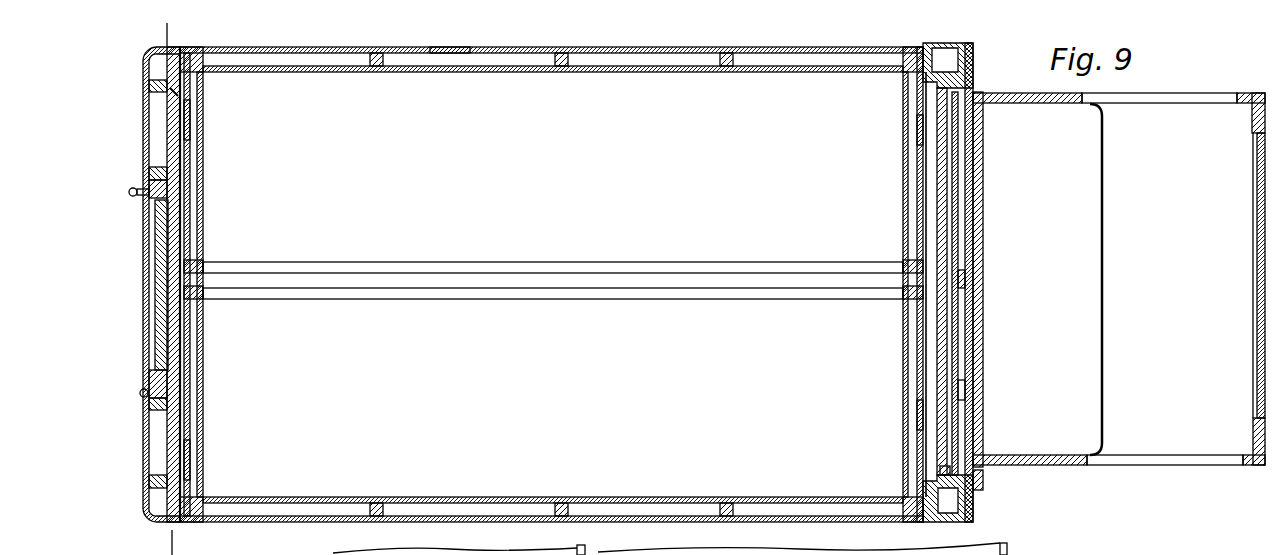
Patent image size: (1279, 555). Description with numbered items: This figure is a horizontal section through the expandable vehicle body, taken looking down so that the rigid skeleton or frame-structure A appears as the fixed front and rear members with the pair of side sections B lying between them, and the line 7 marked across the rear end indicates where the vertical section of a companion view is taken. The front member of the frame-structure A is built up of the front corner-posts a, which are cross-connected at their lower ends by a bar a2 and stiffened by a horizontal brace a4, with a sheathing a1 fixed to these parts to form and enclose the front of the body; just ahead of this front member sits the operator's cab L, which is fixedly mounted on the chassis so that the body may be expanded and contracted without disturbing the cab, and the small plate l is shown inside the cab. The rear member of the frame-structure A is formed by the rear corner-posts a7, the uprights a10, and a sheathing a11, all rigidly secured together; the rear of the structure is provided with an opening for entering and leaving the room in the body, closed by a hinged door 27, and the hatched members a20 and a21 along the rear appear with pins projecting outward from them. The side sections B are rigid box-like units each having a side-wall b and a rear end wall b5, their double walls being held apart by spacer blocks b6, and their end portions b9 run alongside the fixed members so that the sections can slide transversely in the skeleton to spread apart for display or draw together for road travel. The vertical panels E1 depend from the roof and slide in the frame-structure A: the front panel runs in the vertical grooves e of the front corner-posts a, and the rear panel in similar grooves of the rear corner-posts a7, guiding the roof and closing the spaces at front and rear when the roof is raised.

The section line 7— 7 is at (152, 33).
The hinged door 27 is at (145, 268).
The uprights a10 is at (160, 173).
The rear corner-posts a7 is at (128, 538).
The pin with head a20 is at (150, 185).
The pin with head a21 is at (150, 388).
The sheathing a11 is at (148, 470).
The vertical panels E1 is at (165, 238).
The side sections B is at (622, 63).
The side-wall b is at (447, 51).
The spacer blocks between container walls b6 is at (373, 73).
The rear end wall b5 is at (188, 118).
The container end wall b9 is at (888, 424).
The vertical grooves e is at (176, 92).
The frame-structure A is at (968, 42).
The front corner-posts a is at (972, 52).
The bar a2 is at (962, 355).
The sheathing a1 is at (966, 390).
The horizontal brace a4 is at (975, 485).
The operator's cab L is at (1119, 279).
The reflector plate l is at (1100, 430).